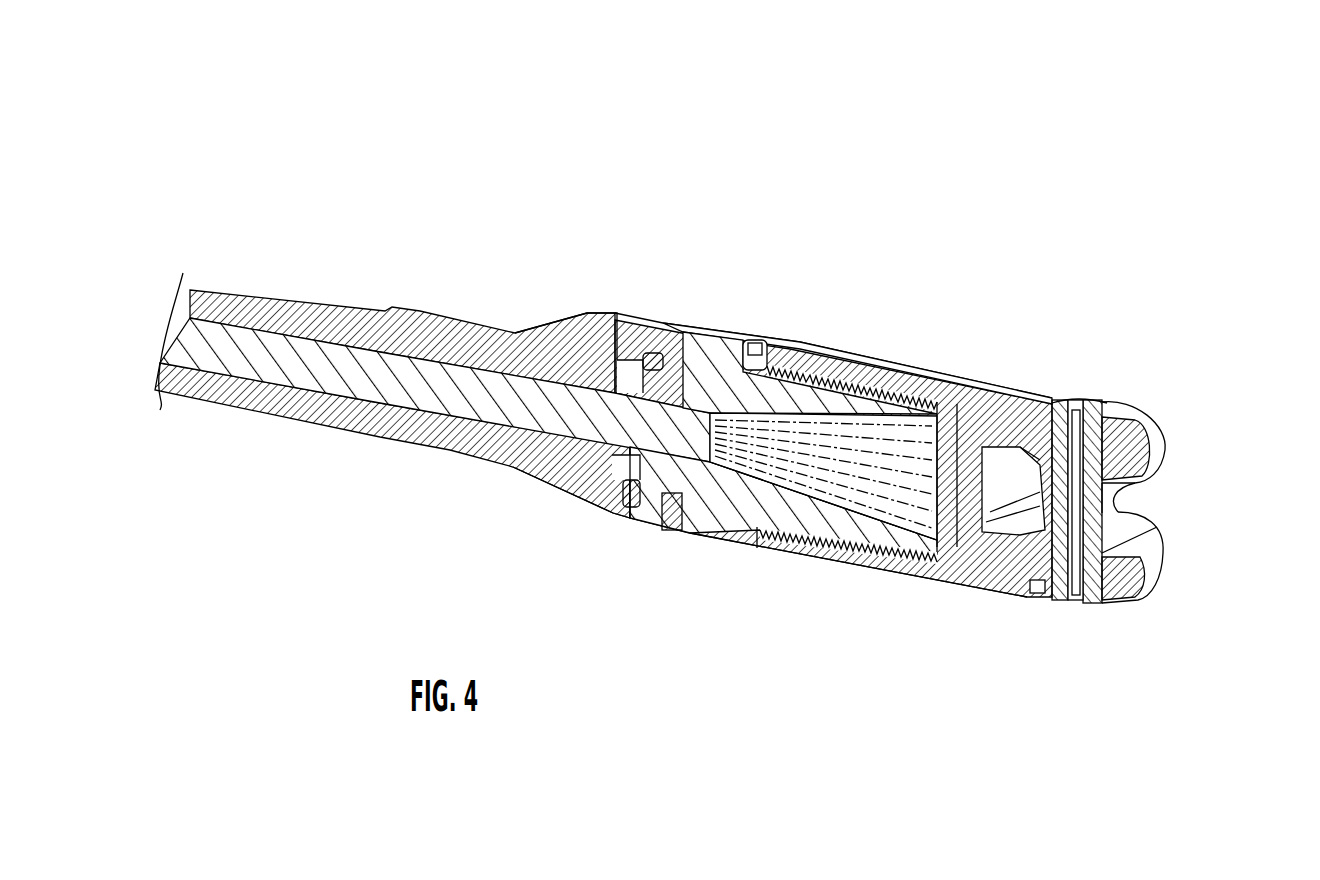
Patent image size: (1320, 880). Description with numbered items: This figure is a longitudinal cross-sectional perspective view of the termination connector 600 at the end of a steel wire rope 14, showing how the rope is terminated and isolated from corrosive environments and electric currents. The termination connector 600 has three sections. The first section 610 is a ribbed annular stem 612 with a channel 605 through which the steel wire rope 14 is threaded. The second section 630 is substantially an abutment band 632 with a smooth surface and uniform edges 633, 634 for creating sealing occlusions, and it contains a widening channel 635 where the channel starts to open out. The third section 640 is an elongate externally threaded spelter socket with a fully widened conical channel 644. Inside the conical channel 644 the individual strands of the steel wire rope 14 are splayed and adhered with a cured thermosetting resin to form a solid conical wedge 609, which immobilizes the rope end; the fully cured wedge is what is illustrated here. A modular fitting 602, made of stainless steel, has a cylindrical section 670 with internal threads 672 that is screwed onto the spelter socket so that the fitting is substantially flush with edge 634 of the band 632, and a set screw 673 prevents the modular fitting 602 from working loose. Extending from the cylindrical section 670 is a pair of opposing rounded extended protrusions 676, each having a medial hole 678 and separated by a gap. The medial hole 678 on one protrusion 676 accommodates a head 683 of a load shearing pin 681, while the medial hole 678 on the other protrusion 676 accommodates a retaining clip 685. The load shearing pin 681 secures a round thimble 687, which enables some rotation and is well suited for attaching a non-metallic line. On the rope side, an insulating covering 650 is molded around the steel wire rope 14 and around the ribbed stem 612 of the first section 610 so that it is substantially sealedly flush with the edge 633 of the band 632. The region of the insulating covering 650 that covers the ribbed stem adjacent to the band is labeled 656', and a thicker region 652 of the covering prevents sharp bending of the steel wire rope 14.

The termination connector 600 is at (530, 128).
The steel wire rope 14 is at (310, 368).
The insulating covering 650 is at (342, 502).
The thicker region 652 is at (440, 437).
The channel 605 is at (583, 447).
The first section 610 is at (602, 313).
The ribbed annular stem 612 is at (663, 353).
The second section 630 is at (730, 313).
The abutment band 632 is at (710, 533).
The edge 633 is at (662, 527).
The edge 634 is at (770, 556).
The widening channel 635 is at (657, 527).
The region of insulated covering 656' is at (593, 553).
The third section 640 is at (853, 368).
The conical channel 644 is at (888, 532).
The solid conical wedge 609 is at (862, 473).
The internal threads 672 is at (803, 345).
The set screw 673 is at (758, 340).
The cylindrical section 670 is at (913, 357).
The modular fitting 602 is at (962, 642).
The head 683 is at (1060, 398).
The load shearing pin 681 is at (1088, 400).
The medial hole 678 is at (1110, 390).
The rounded extended protrusion 676 is at (1145, 442).
The round thimble 687 is at (1128, 536).
The retaining clip 685 is at (1043, 592).